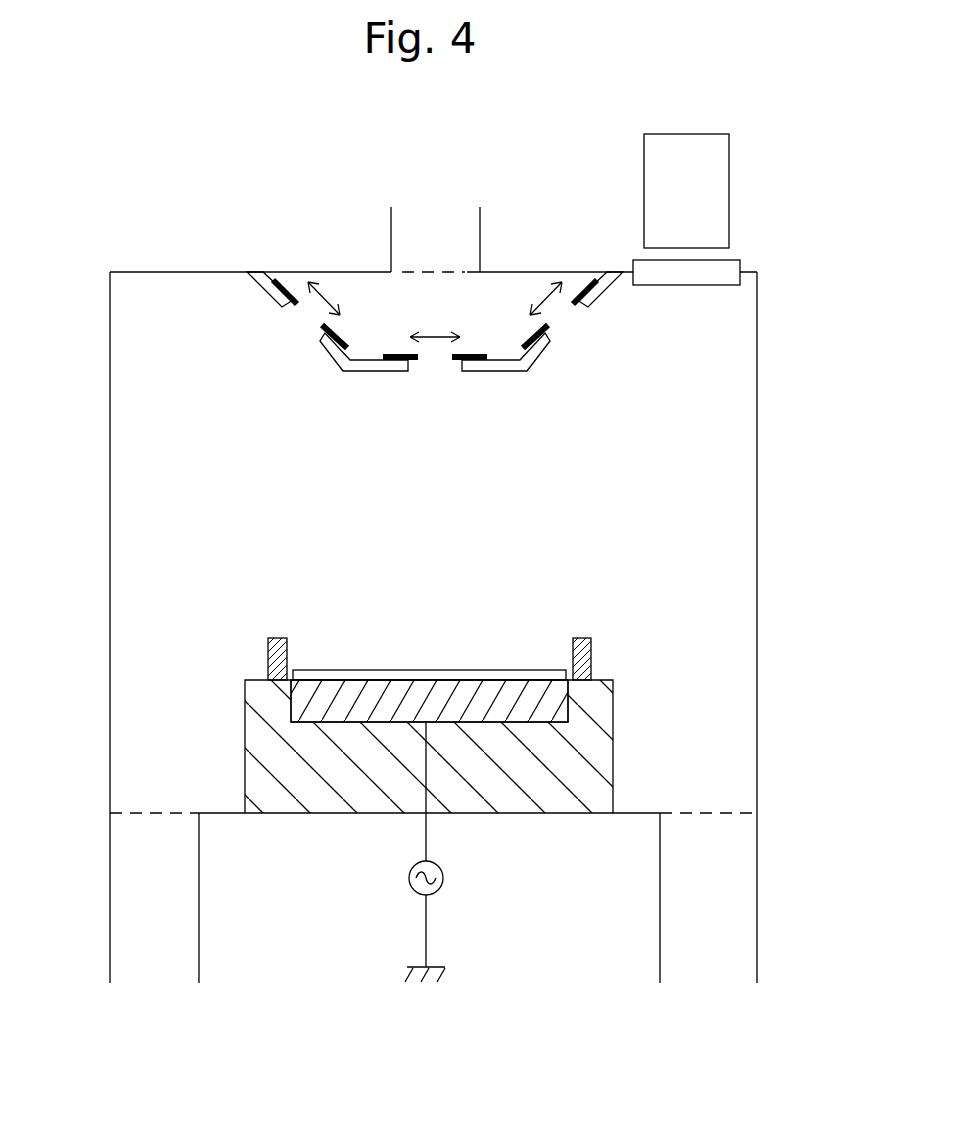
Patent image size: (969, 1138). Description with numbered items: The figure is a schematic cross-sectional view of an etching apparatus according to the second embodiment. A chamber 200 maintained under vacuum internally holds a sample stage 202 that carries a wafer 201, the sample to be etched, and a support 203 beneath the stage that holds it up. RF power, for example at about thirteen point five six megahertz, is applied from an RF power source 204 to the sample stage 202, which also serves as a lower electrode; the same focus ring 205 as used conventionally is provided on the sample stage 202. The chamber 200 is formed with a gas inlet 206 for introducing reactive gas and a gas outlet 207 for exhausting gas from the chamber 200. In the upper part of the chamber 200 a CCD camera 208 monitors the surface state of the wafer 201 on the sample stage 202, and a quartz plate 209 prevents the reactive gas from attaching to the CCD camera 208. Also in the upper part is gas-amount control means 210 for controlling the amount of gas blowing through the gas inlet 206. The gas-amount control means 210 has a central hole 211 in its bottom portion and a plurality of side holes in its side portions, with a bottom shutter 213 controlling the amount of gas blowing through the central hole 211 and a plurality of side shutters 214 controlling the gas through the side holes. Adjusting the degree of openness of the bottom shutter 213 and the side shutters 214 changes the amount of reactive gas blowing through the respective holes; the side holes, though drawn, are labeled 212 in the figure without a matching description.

The chamber 200 is at (757, 547).
The wafer 201 is at (487, 670).
The sample stage 202 is at (420, 680).
The support 203 is at (507, 814).
The RF power source 204 is at (408, 878).
The focus ring 205 is at (580, 638).
The gas inlet 206 is at (390, 227).
The gas outlet 207 is at (110, 922).
The CCD camera 208 is at (731, 145).
The quartz plate 209 is at (733, 260).
The gas-amount control means 210 is at (517, 289).
The central hole 211 is at (436, 368).
The lower electrode plates 212 is at (303, 320).
The bottom shutter 213 is at (413, 363).
The side shutters 214 is at (290, 306).